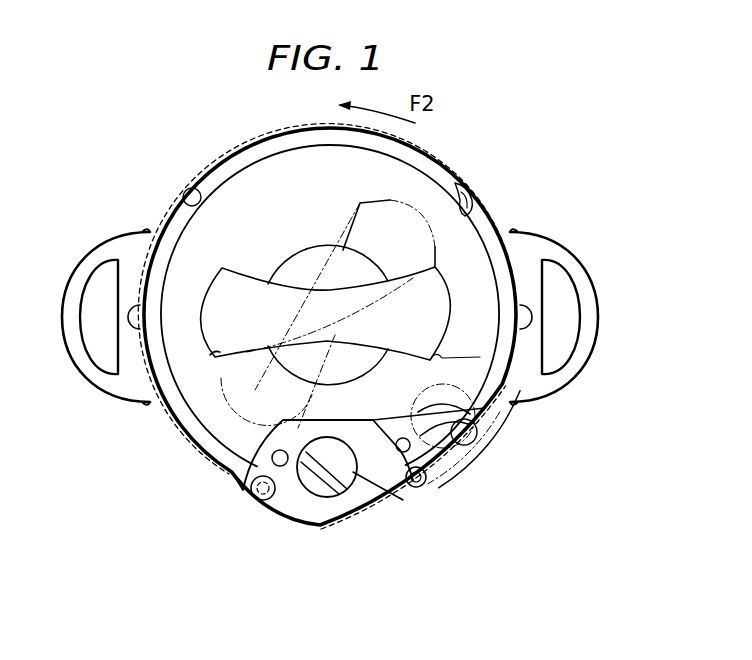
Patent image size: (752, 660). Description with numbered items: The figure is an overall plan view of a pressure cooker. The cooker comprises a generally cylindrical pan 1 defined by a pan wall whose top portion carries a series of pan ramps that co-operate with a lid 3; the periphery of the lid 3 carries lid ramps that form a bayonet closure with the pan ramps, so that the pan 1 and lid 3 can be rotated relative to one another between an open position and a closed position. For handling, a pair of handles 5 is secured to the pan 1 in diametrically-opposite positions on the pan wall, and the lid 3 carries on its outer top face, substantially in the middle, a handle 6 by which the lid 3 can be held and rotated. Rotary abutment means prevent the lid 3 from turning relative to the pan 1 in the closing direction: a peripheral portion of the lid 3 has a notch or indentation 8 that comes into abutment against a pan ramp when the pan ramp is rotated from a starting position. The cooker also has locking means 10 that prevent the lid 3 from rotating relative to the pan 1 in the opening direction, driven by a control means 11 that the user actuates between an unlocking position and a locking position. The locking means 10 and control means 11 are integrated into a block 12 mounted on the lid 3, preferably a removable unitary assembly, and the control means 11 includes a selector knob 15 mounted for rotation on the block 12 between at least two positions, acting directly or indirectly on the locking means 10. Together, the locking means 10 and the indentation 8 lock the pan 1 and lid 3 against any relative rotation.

The pan 1 is at (496, 205).
The lid 3 is at (252, 192).
The handles 5 is at (93, 373).
The handle 6 is at (173, 417).
The indentation 8 is at (462, 187).
The locking means 10 is at (240, 494).
The control means 11 is at (333, 502).
The block 12 is at (281, 507).
The selector knob 15 is at (407, 487).